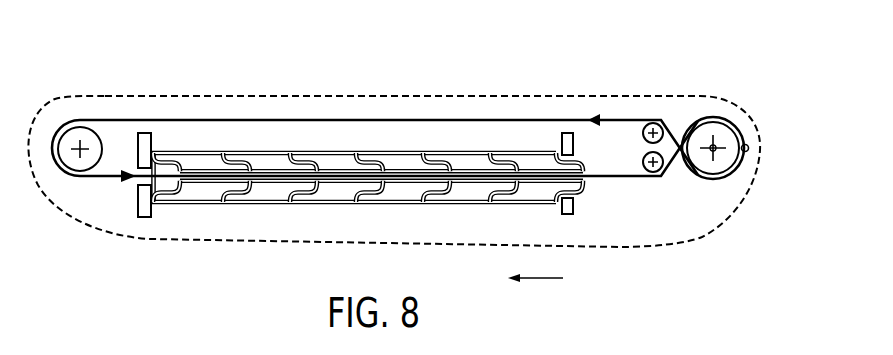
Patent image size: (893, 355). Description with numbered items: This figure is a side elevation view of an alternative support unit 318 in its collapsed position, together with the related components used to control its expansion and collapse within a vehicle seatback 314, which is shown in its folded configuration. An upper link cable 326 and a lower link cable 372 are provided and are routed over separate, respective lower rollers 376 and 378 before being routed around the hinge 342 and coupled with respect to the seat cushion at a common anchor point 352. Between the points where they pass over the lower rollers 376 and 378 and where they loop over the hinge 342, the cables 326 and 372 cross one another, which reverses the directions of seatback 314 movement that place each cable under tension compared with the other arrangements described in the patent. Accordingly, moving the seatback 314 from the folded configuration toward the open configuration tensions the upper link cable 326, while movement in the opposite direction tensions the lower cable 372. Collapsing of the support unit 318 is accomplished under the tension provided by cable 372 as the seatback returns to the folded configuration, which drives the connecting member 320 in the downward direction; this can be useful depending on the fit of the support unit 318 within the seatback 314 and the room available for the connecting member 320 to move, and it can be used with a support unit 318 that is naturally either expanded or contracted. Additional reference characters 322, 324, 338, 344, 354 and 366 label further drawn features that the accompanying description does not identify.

The seatback 314 is at (326, 94).
The support unit 318 is at (222, 128).
The connecting member 320 is at (412, 176).
The upper fold 322 is at (303, 160).
The lower fold 324 is at (512, 152).
The upper link cable 326 is at (633, 118).
The folded sheet 338 is at (272, 150).
The hinge 342 is at (725, 128).
The direction of travel 344 is at (543, 279).
The common anchor point 352 is at (748, 148).
The pulley 354 is at (85, 133).
The guide 366 is at (143, 136).
The lower link cable 372 is at (667, 170).
The lower roller 376 is at (663, 124).
The lower roller 378 is at (657, 180).